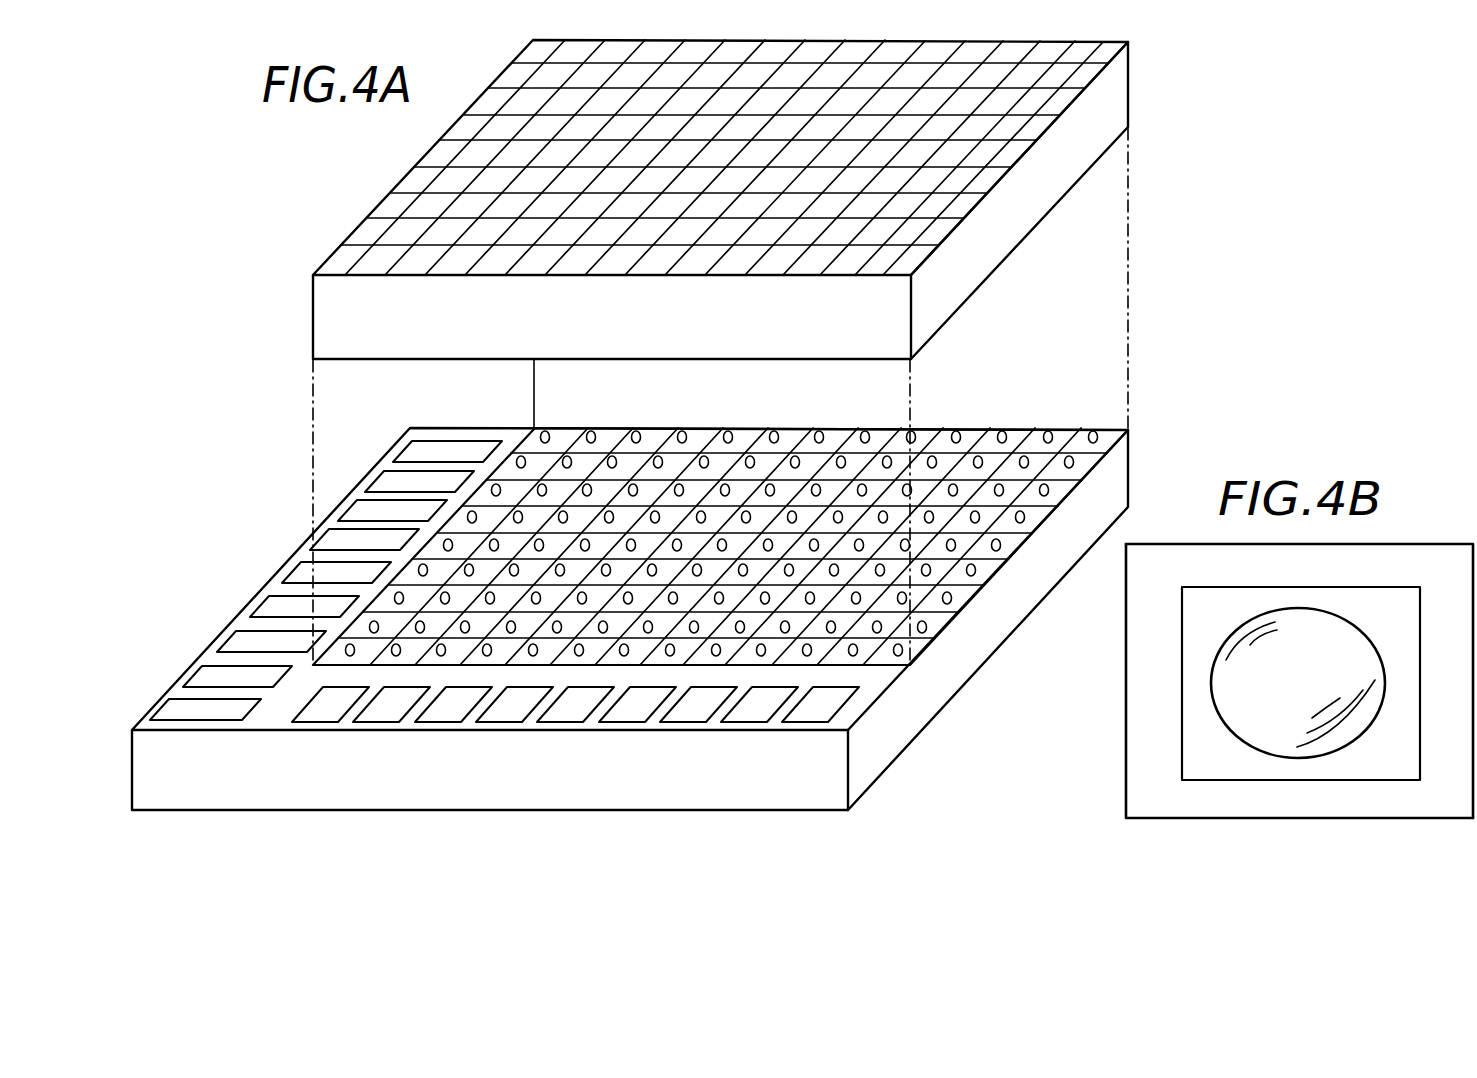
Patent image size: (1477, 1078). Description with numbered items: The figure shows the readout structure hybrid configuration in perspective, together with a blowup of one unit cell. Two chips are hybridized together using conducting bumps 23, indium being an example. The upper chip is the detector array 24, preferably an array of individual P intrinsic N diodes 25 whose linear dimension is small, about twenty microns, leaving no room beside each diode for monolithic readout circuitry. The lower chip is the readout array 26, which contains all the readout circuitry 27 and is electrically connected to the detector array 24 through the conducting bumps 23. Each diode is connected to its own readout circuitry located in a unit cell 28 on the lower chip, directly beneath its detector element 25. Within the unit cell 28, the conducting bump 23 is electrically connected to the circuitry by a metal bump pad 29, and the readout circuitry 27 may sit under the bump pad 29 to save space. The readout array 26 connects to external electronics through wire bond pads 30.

In FIG. 4A, the conducting bumps 23 is at (785, 567).
In FIG. 4B, the conducting bumps 23 is at (1228, 635).
In FIG. 4A, the detector array 24 is at (1107, 97).
In FIG. 4A, the PIN diodes 25 is at (905, 265).
In FIG. 4A, the readout array 26 is at (152, 752).
In FIG. 4B, the readout circuitry 27 is at (1150, 778).
In FIG. 4B, the unit cell 28 is at (1392, 544).
In FIG. 4B, the metal bump pad 29 is at (1192, 723).
In FIG. 4A, the wire bond pads 30 is at (412, 452).